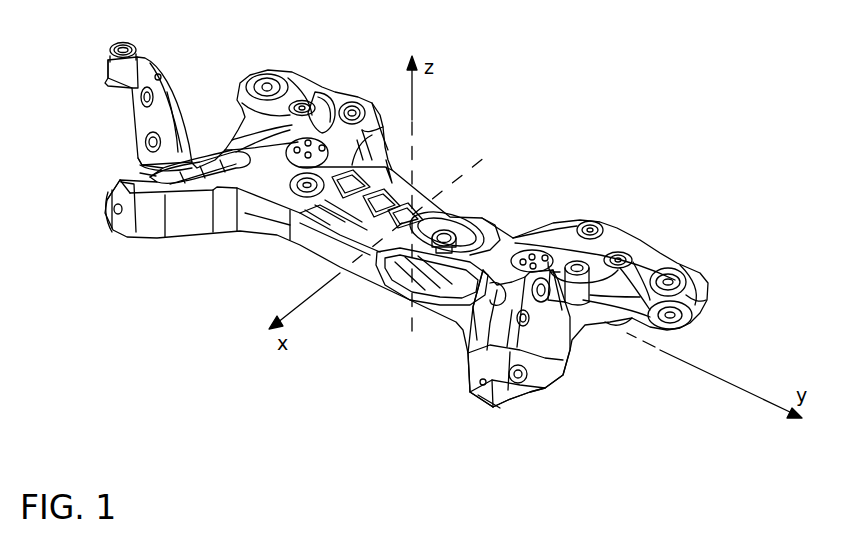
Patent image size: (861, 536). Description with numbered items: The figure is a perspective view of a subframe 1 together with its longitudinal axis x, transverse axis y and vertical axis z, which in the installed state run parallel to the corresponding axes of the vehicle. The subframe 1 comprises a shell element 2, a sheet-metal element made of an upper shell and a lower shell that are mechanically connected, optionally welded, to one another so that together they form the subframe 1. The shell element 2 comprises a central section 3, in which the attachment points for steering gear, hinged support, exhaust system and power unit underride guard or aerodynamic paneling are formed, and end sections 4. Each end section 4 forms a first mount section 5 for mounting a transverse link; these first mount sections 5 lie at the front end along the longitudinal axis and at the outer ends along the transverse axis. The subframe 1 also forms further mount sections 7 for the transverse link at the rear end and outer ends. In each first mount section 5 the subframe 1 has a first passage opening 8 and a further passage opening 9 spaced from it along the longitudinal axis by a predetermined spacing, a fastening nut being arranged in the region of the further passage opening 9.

The subframe 1 is at (276, 232).
The shell element 2 is at (562, 235).
The central section 3 is at (437, 208).
The end sections 4 is at (309, 92).
The first mount section 5 is at (118, 254).
The further mount sections 7 is at (228, 112).
The first passage opening 8 is at (482, 382).
The further passage opening 9 is at (518, 374).